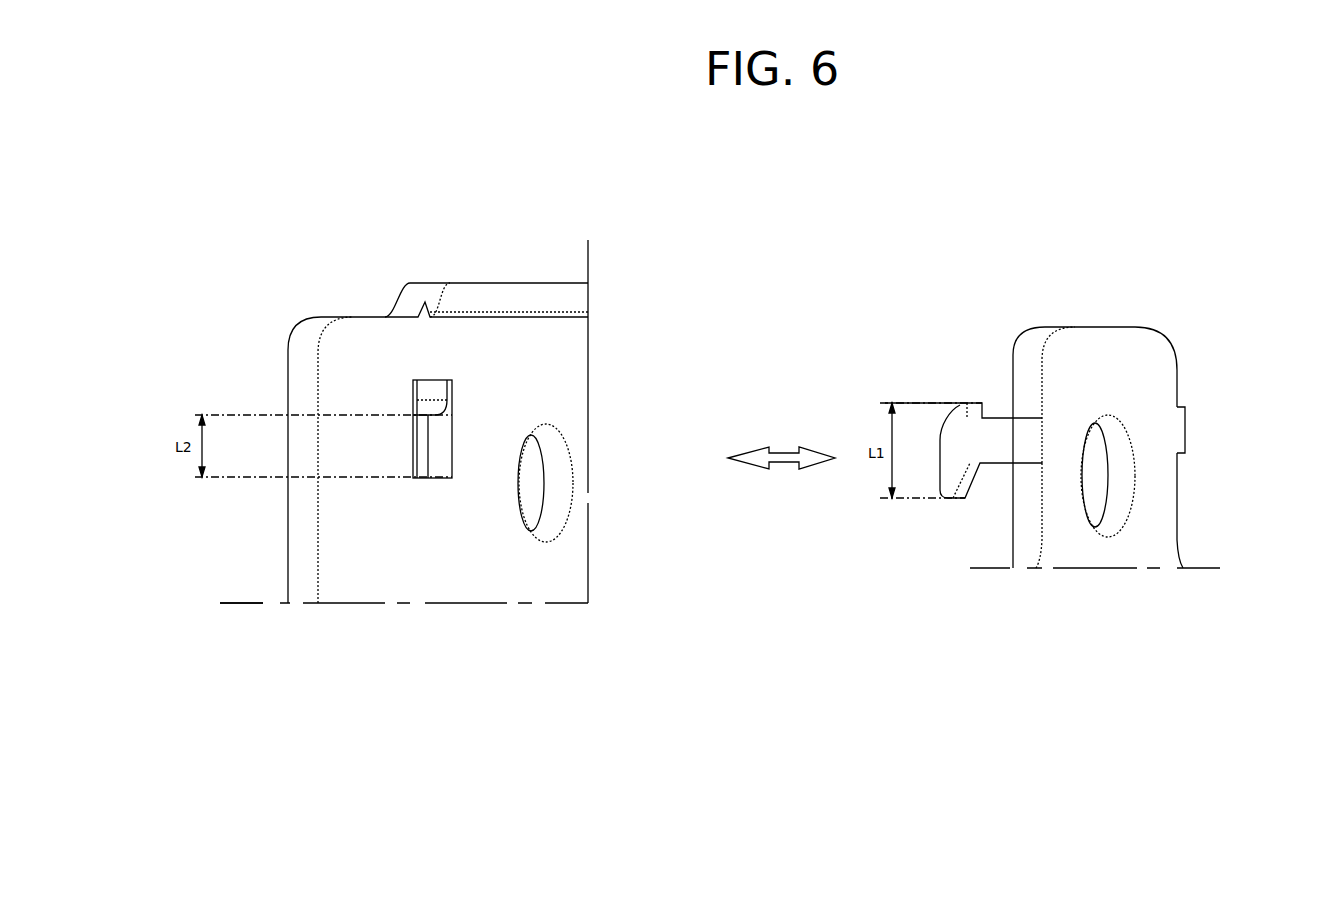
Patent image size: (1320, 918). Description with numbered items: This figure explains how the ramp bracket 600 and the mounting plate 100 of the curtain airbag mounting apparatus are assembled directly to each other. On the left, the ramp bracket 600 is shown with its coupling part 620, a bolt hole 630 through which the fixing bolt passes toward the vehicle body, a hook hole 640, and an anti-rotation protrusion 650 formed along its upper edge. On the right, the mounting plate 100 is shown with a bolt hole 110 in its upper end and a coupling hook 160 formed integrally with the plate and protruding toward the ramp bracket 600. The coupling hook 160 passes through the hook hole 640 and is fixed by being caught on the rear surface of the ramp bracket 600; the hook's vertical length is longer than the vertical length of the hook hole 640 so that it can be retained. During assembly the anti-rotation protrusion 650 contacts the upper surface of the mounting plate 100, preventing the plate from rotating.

The ramp bracket 600 is at (305, 320).
The coupling part 620 is at (462, 565).
The bolt hole 630 is at (533, 482).
The hook hole 640 is at (422, 445).
The anti-rotation protrusion 650 is at (520, 300).
The mounting plate 100 is at (1118, 352).
The bolt hole 110 is at (1118, 502).
The coupling hook 160 is at (945, 490).